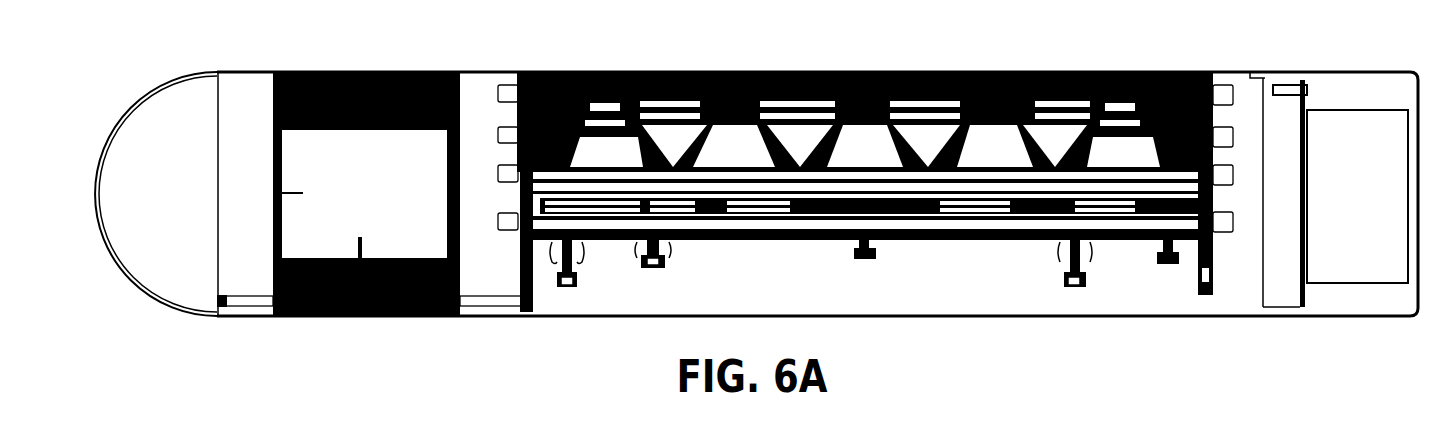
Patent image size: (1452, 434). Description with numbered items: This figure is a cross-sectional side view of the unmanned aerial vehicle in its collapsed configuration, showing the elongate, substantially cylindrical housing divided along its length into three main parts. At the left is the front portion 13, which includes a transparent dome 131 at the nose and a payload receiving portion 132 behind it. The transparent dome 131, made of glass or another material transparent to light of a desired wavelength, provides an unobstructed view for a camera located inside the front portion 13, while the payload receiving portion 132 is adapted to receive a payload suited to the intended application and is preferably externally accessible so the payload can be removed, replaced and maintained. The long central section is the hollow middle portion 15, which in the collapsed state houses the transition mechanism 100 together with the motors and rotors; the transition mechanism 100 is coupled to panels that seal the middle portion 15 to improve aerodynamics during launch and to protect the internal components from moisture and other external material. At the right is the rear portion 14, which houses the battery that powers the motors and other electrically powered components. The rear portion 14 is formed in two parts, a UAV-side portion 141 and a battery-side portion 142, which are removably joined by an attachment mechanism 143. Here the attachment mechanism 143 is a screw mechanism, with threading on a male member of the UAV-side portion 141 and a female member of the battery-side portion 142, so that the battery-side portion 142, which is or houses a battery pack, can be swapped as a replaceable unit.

The front portion 13 is at (123, 68).
The transparent dome 131 is at (122, 262).
The payload receiving portion 132 is at (357, 316).
The middle portion 15 is at (1250, 68).
The transition mechanism 100 is at (938, 228).
The rear portion 14 is at (1422, 68).
The UAV-side portion 141 is at (1278, 272).
The battery-side portion 142 is at (1342, 262).
The attachment mechanism 143 is at (1273, 305).